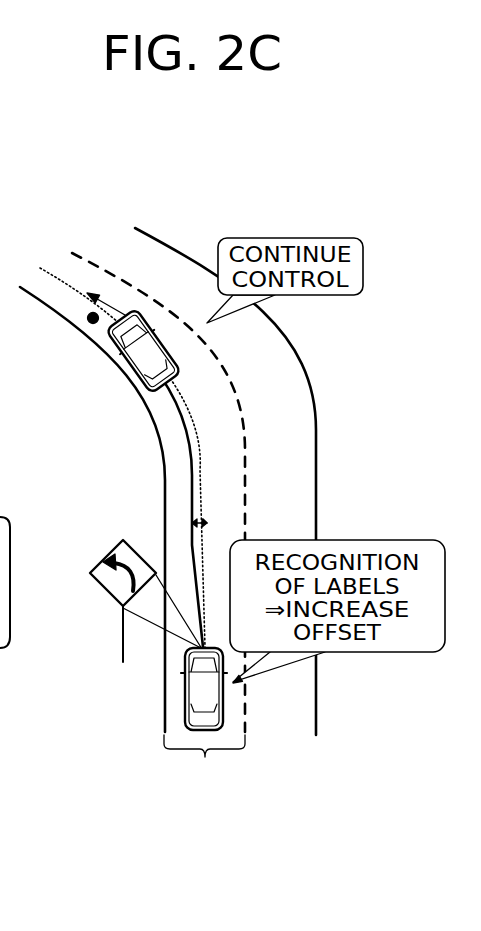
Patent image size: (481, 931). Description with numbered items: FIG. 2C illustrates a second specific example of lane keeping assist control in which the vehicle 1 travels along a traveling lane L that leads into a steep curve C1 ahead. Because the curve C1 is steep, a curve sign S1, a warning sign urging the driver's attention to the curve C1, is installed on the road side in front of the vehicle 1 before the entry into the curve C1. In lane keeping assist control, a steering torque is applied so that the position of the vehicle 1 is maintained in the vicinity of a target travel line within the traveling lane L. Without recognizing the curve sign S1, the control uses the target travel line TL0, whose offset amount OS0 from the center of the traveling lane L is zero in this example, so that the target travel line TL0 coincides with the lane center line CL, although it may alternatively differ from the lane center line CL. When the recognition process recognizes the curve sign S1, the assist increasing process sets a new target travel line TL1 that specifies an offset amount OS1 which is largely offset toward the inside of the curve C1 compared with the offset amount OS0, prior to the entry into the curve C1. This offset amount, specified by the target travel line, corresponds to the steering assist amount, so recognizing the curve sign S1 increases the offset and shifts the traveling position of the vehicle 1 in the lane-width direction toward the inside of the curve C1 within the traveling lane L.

The lane center line CL is at (61, 278).
The curve C1 is at (93, 324).
The target travel line TL0 is at (200, 442).
The target travel line TL1 is at (191, 486).
The offset amount OS0 is at (207, 520).
The offset amount OS1 is at (196, 516).
The curve sign S1 is at (108, 556).
The vehicle 1 is at (185, 697).
The traveling lane L is at (204, 765).